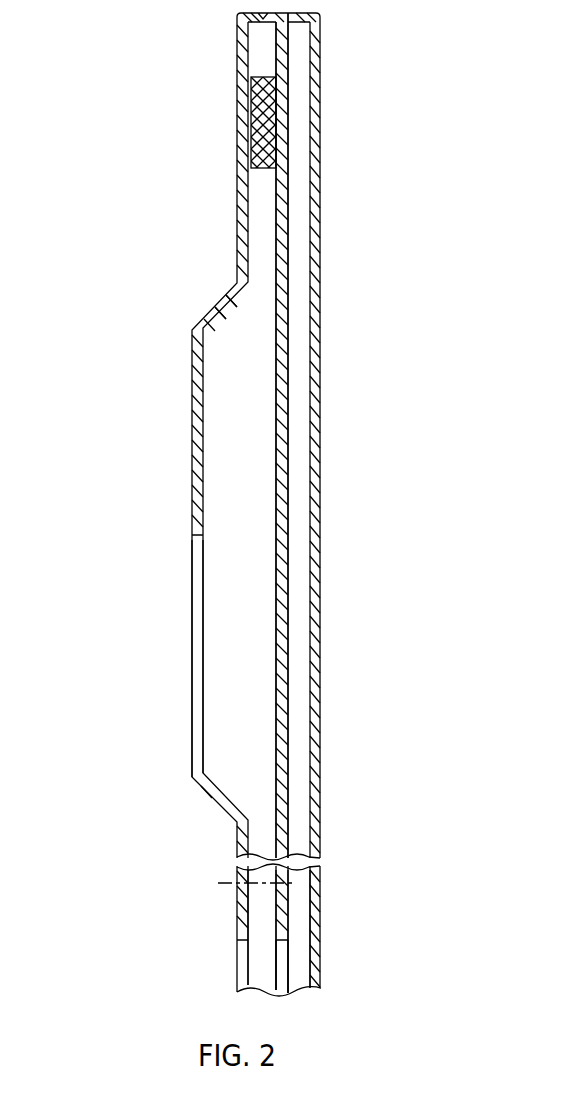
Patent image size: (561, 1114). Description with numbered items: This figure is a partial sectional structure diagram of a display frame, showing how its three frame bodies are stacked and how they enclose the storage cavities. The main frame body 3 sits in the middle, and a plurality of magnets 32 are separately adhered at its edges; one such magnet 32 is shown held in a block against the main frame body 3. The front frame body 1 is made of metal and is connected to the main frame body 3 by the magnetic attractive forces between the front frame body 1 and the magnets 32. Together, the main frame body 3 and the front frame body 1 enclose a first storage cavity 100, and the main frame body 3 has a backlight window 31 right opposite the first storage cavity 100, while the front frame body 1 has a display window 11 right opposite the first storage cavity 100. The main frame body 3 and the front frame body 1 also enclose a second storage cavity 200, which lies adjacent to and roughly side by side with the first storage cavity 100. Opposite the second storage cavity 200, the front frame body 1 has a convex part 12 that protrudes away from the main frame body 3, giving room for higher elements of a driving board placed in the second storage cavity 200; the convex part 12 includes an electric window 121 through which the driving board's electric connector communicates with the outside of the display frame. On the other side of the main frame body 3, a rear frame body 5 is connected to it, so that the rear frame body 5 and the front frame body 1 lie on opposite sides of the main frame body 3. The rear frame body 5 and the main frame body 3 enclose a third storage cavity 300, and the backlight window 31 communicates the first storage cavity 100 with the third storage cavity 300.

The front frame body 1 is at (244, 179).
The display window 11 is at (244, 969).
The convex part 12 is at (217, 301).
The electric window 121 is at (196, 635).
The main frame body 3 is at (284, 95).
The backlight window 31 is at (286, 972).
The magnet 32 is at (261, 135).
The rear frame body 5 is at (313, 776).
The first storage cavity 100 is at (263, 911).
The second storage cavity 200 is at (256, 549).
The third storage cavity 300 is at (289, 889).